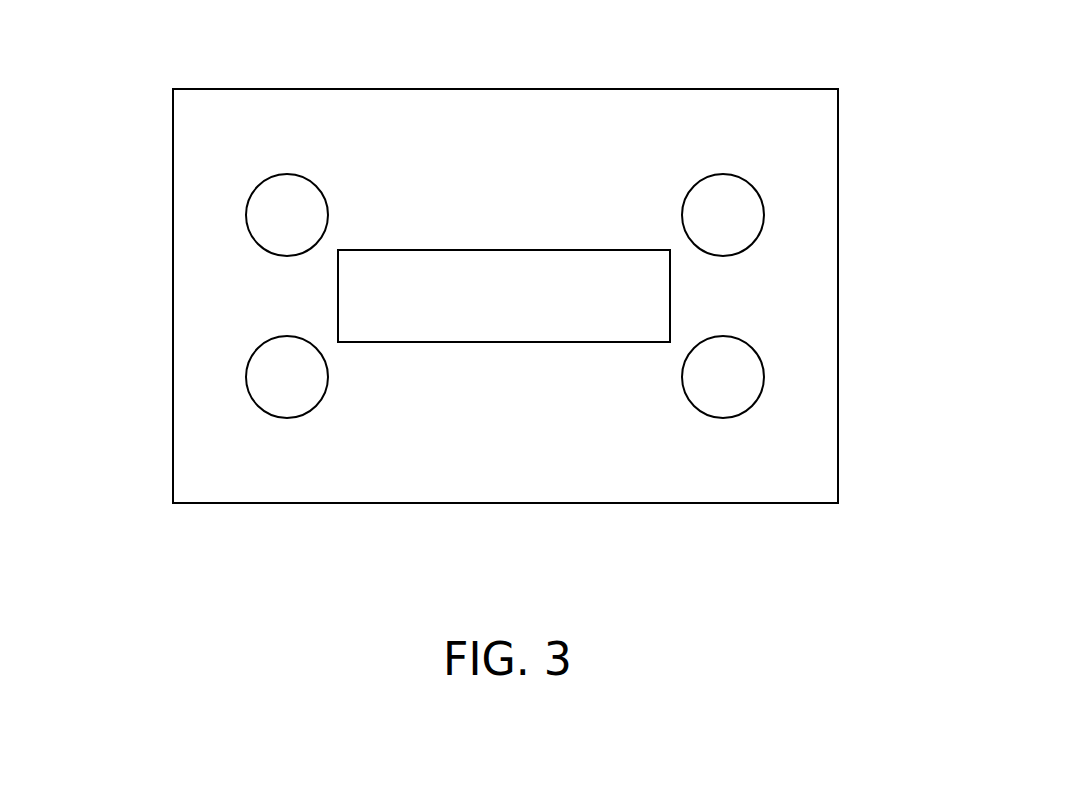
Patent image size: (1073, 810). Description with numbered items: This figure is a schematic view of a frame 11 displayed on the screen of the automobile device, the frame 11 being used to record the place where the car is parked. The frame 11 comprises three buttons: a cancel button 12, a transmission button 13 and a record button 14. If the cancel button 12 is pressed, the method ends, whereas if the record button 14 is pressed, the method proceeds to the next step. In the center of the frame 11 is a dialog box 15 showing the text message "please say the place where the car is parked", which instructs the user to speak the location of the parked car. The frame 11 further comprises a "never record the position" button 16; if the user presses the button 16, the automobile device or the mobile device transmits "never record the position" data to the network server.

The frame 11 is at (838, 164).
The cancel button 12 is at (247, 198).
The transmission button 13 is at (250, 360).
The record button 14 is at (761, 233).
The dialog box 15 is at (523, 248).
The "never record the position" button 16 is at (762, 397).